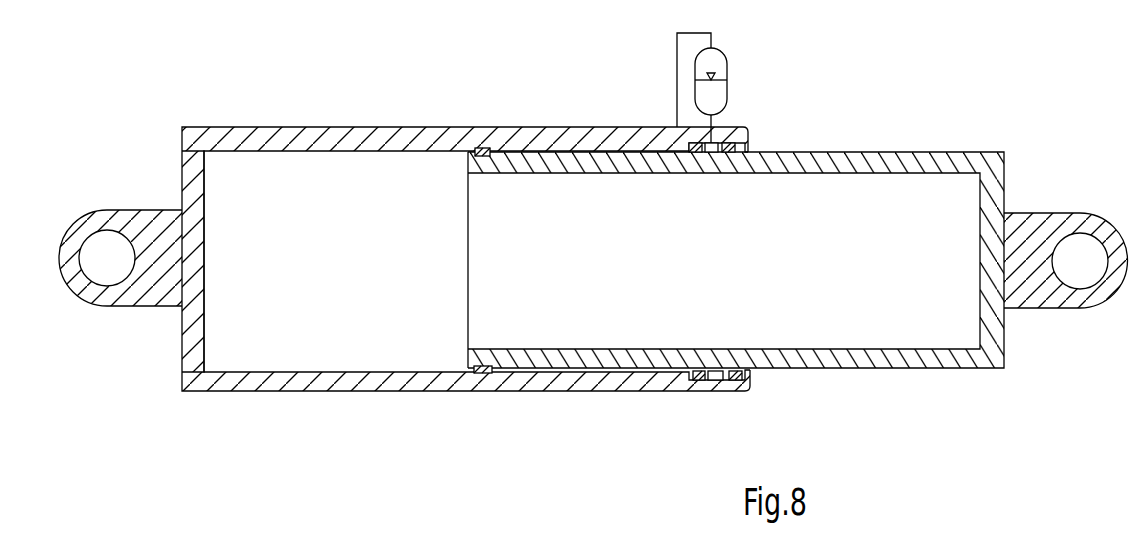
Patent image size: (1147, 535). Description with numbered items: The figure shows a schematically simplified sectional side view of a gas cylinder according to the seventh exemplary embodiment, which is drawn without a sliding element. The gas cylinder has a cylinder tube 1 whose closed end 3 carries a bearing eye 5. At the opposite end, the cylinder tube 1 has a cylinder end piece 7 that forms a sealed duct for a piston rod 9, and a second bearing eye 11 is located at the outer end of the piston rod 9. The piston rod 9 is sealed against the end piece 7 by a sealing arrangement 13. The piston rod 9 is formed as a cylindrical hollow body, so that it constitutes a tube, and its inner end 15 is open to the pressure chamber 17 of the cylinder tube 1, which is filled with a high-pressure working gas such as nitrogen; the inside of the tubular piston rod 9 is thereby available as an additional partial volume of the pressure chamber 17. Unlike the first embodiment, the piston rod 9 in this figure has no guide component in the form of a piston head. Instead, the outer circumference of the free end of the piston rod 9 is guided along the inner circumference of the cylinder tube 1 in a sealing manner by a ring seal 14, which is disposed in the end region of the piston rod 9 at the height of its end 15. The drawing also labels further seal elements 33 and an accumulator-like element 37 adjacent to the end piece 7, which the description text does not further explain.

The cylinder tube 1 is at (387, 137).
The closed end 3 is at (187, 137).
The bearing eye 5 is at (135, 222).
The cylinder end piece 7 is at (750, 379).
The piston rod 9 is at (885, 155).
The bearing eye 11 is at (1037, 225).
The sealing arrangement 13 is at (693, 394).
The ring seal 14 is at (482, 148).
The inner end 15 is at (468, 228).
The pressure chamber 17 is at (277, 172).
The upper seal arrangement 33 is at (722, 143).
The accumulator 37 is at (718, 52).